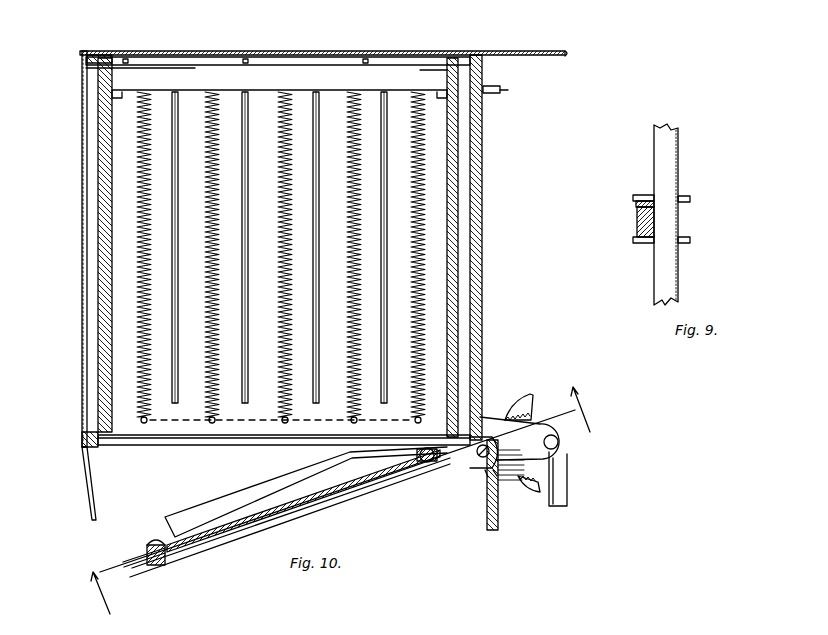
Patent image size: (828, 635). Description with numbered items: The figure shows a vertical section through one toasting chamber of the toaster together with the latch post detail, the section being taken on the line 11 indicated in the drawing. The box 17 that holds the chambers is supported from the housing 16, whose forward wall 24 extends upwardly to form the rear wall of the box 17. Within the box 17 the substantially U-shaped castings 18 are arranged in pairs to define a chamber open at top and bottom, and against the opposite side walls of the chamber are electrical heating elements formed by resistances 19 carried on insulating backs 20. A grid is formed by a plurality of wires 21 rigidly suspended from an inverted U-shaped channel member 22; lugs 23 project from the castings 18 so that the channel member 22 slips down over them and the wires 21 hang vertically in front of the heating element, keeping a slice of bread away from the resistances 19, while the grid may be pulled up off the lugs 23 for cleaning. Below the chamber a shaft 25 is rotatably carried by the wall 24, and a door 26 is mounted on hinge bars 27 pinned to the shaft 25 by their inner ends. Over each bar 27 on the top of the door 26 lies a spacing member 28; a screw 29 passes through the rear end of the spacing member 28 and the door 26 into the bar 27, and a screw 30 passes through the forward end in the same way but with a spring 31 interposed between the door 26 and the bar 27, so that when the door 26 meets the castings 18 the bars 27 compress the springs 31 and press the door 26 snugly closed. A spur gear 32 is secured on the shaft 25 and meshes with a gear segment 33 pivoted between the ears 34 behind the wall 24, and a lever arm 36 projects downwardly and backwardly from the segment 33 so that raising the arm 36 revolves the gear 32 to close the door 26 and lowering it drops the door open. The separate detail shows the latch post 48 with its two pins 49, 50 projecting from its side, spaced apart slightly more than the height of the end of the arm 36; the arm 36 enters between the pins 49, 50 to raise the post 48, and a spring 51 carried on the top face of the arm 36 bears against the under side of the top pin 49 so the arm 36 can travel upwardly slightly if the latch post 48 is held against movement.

In FIG. 10, the section line 11 is at (347, 510).
In FIG. 10, the housing 16 is at (545, 56).
In FIG. 10, the box 17 is at (84, 317).
In FIG. 10, the castings 18 is at (114, 437).
In FIG. 10, the resistances 19 is at (272, 410).
In FIG. 10, the insulating backs 20 is at (182, 437).
In FIG. 10, the wires 21 is at (178, 288).
In FIG. 10, the channel member 22 is at (340, 72).
In FIG. 10, the lugs 23 is at (122, 100).
In FIG. 10, the forward wall 24 is at (483, 245).
In FIG. 10, the shaft 25 is at (493, 472).
In FIG. 10, the door 26 is at (210, 528).
In FIG. 10, the hinge bars 27 is at (362, 487).
In FIG. 10, the spacing member 28 is at (190, 510).
In FIG. 10, the screw 29 is at (422, 462).
In FIG. 10, the screw 30 is at (152, 546).
In FIG. 10, the spring 31 is at (148, 572).
In FIG. 10, the spur gear 32 is at (478, 460).
In FIG. 10, the gear segment 33 is at (510, 401).
In FIG. 10, the ears 34 is at (546, 430).
In FIG. 10, the lever arm 36 is at (568, 491).
In FIG. 9, the lever arm 36 is at (637, 222).
In FIG. 9, the latch post 48 is at (670, 157).
In FIG. 9, the pin 49 is at (633, 197).
In FIG. 9, the pin 50 is at (633, 241).
In FIG. 9, the spring 51 is at (636, 204).